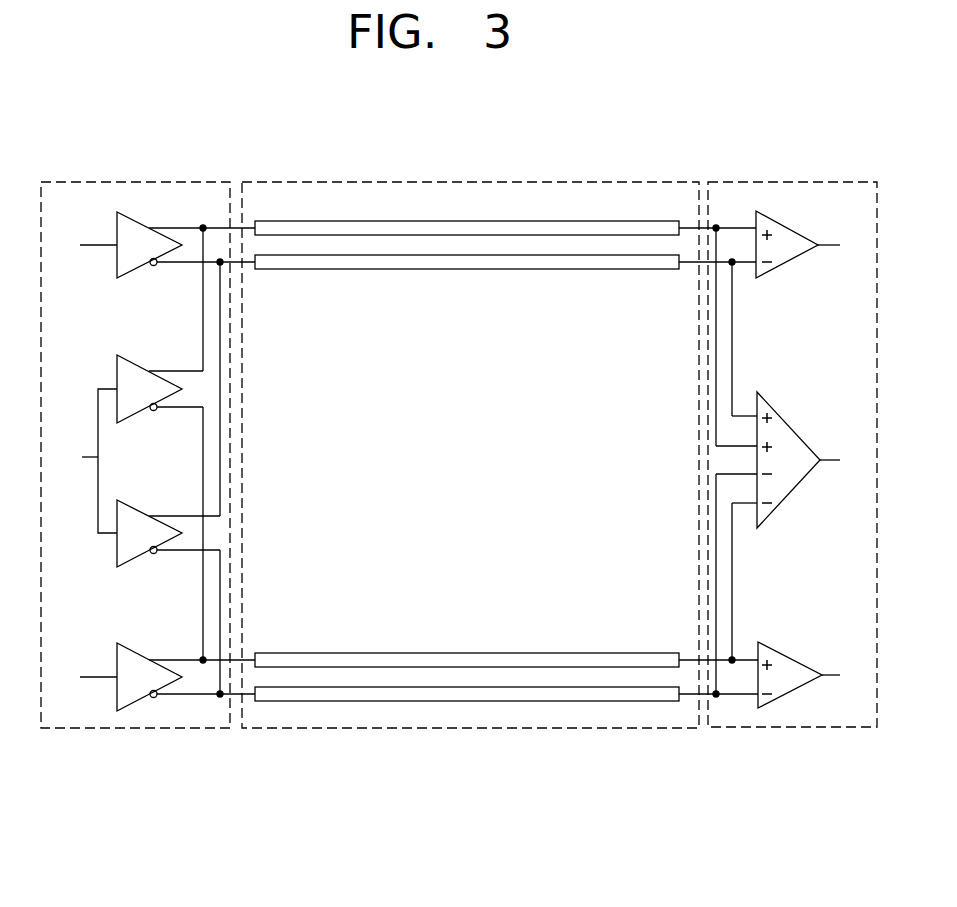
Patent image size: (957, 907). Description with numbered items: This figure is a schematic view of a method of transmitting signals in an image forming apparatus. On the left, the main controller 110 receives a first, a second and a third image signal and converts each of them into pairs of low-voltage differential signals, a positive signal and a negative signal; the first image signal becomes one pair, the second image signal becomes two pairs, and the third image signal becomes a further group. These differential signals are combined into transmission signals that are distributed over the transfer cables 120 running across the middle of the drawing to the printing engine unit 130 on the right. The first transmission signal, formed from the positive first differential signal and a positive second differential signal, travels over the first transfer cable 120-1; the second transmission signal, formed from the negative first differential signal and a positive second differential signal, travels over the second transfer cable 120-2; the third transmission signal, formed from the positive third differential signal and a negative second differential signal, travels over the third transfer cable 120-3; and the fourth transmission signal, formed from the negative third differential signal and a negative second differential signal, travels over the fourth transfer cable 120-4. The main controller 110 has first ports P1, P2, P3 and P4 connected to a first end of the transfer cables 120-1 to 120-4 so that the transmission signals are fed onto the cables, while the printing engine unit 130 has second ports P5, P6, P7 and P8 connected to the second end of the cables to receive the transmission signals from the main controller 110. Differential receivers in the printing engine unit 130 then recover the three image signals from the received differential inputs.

The main controller 110 is at (128, 182).
The transfer cables 120 is at (480, 420).
The printing engine unit 130 is at (792, 182).
The first transfer cable 120-1 is at (410, 230).
The second transfer cable 120-2 is at (495, 264).
The third transfer cable 120-3 is at (535, 653).
The fourth transfer cable 120-4 is at (430, 688).
The first port P1 is at (203, 225).
The first port P2 is at (220, 259).
The first port P3 is at (203, 663).
The first port P4 is at (220, 697).
The second port P5 is at (716, 225).
The second port P6 is at (732, 259).
The second port P7 is at (733, 663).
The second port P8 is at (717, 697).